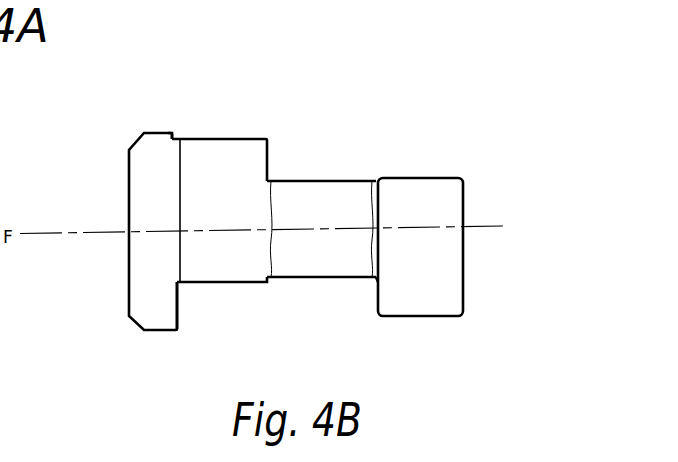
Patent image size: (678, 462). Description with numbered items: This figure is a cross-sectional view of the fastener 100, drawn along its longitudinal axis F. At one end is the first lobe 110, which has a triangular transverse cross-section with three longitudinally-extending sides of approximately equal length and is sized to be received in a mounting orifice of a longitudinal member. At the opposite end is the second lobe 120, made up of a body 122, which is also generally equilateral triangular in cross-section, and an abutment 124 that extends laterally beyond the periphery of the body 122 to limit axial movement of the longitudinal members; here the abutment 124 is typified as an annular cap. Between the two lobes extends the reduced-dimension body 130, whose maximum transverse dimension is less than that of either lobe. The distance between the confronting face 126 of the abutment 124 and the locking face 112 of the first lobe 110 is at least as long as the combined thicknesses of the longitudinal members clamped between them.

The fastener 100 is at (410, 58).
The first lobe 110 is at (452, 287).
The locking face 112 is at (377, 293).
The second lobe 120 is at (174, 132).
The body of the second lobe 122 is at (222, 152).
The abutment 124 is at (135, 180).
The confronting face 126 is at (178, 311).
The reduced-dimension body 130 is at (332, 197).